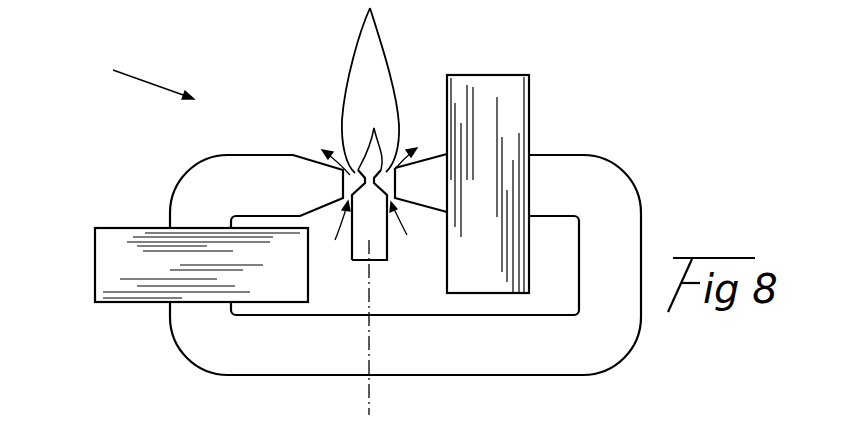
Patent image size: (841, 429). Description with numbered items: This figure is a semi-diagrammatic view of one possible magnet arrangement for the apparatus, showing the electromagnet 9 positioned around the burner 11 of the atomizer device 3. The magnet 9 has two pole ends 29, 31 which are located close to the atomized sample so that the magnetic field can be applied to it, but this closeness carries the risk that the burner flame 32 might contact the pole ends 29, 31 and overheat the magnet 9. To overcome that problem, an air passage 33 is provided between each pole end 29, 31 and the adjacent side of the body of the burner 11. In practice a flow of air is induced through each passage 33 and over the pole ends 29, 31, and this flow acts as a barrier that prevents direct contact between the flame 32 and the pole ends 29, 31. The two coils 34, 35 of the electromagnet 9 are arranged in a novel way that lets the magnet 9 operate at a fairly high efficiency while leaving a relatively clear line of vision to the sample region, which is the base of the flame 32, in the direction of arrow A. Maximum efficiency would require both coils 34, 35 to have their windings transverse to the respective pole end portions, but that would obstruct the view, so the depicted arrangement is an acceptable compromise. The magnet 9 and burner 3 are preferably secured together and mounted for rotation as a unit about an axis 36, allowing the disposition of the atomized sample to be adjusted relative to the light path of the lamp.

The magnet 9 is at (178, 354).
The coil 34 is at (113, 260).
The coil 35 is at (518, 115).
The burner 11 is at (383, 237).
The air passage 33 is at (365, 147).
The burner flame 32 is at (373, 62).
The magnet pole end 29 is at (345, 192).
The magnet pole end 31 is at (393, 178).
The atomizer device 3 is at (358, 271).
The axis 36 is at (371, 393).
The arrow A is at (114, 52).